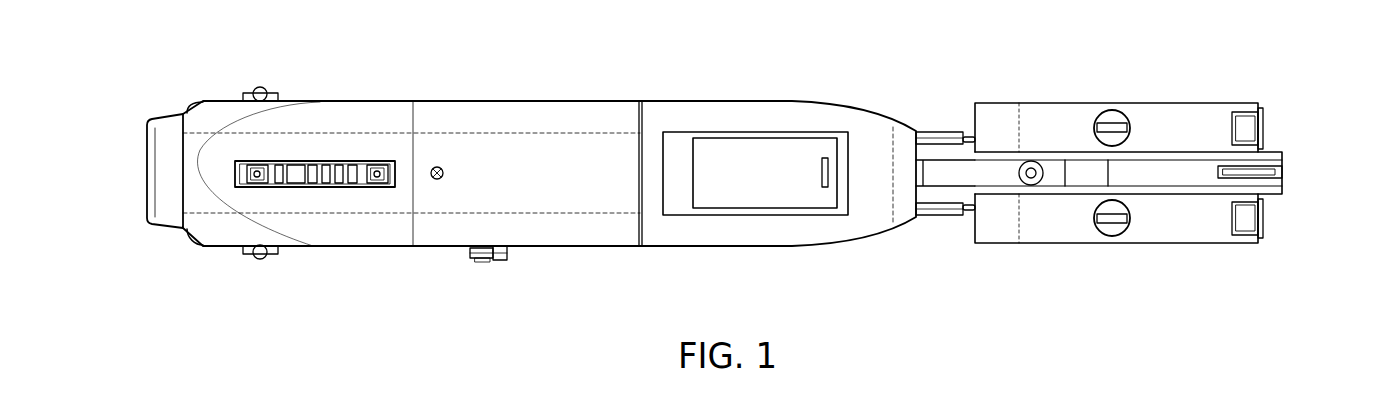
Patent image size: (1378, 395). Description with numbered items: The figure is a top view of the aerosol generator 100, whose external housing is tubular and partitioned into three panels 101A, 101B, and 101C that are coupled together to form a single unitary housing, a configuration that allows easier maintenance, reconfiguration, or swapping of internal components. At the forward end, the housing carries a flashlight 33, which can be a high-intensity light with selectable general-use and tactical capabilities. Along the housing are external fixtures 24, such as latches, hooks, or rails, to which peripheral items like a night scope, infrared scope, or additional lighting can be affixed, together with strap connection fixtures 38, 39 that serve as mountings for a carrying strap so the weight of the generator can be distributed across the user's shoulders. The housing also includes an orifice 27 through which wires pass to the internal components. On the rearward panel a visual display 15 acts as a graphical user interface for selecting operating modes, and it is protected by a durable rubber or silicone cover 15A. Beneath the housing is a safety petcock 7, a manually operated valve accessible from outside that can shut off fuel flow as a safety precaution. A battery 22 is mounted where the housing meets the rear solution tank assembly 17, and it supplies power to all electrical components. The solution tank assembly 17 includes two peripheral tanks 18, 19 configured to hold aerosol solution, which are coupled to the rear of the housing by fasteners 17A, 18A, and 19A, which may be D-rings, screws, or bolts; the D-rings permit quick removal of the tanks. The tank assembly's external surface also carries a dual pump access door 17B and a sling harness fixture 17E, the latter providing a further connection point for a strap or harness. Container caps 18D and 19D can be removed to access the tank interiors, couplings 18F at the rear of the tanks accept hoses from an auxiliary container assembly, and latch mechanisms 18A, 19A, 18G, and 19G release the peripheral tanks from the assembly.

The aerosol generator 100 is at (170, 76).
The housing panel 101A is at (176, 117).
The housing panel 101B is at (598, 98).
The housing panel 101C is at (679, 98).
The safety petcock 7 is at (493, 263).
The visual display 15 is at (783, 216).
The cover 15A is at (820, 216).
The solution tank assembly 17 is at (1285, 163).
The fastener 17A is at (1037, 186).
The dual pump access door 17B is at (950, 179).
The sling harness fixture 17E is at (1285, 181).
The peripheral tank 18 is at (1110, 239).
The fastener / latch mechanism 18A is at (1023, 245).
The container cap 18D is at (1128, 221).
The coupling 18F is at (1265, 128).
The latch mechanism 18G is at (1265, 232).
The peripheral tank 19 is at (1112, 101).
The fastener / latch mechanism 19A is at (1040, 101).
The container cap 19D is at (1130, 122).
The latch mechanism 19G is at (1245, 112).
The battery 22 is at (952, 131).
The external fixture 24 is at (253, 162).
The orifice 27 is at (437, 166).
The flashlight 33 is at (190, 240).
The strap connection fixture 38 is at (262, 90).
The strap connection fixture 39 is at (302, 160).